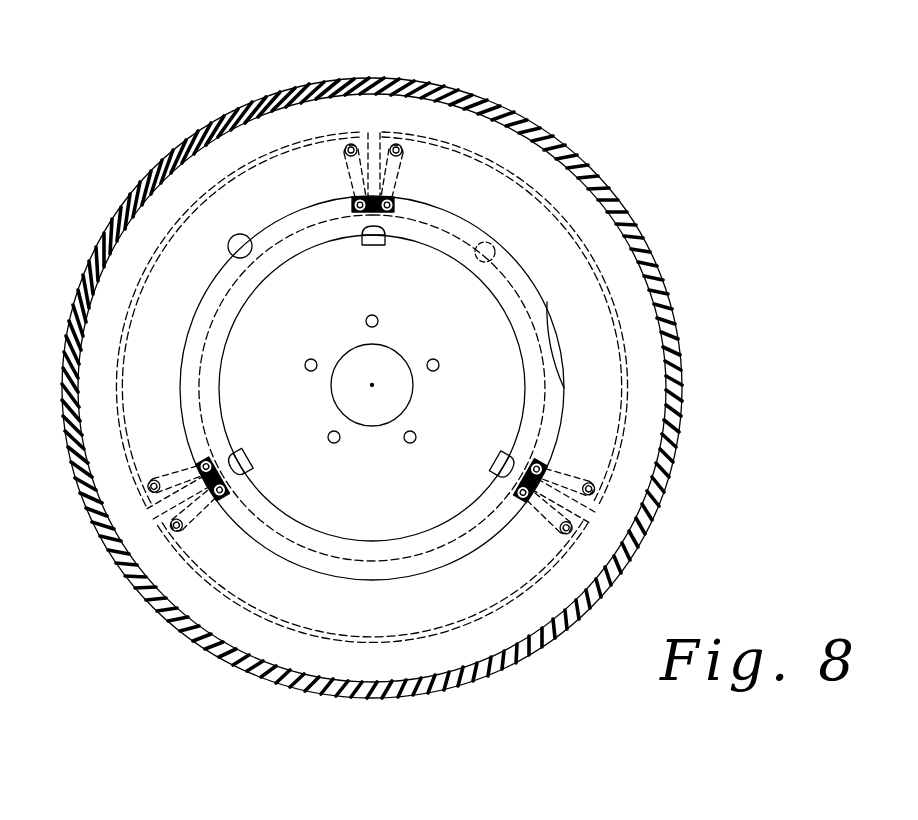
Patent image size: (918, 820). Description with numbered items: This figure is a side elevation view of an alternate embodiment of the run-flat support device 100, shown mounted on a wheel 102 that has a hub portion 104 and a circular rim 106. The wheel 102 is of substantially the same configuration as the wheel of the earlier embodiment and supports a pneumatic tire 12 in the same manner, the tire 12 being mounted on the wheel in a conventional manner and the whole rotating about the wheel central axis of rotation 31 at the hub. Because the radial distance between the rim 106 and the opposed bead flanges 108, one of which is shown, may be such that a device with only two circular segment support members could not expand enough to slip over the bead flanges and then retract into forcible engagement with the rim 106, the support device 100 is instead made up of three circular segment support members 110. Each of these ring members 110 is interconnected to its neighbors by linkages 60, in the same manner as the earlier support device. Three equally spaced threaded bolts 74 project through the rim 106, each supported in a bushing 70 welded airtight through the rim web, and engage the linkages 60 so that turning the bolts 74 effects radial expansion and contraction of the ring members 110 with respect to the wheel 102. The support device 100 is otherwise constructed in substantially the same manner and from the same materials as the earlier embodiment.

The tire 12 is at (328, 80).
The wheel central axis of rotation 31 is at (372, 388).
The linkages 60 is at (400, 171).
The support bushing 70 is at (362, 237).
The threaded bolt 74 is at (386, 237).
The run-flat support device 100 is at (583, 228).
The wheel 102 is at (547, 302).
The hub portion 104 is at (405, 342).
The circular rim 106 is at (488, 262).
The bead flange 108 is at (252, 247).
The circular segment support members 110 is at (142, 260).